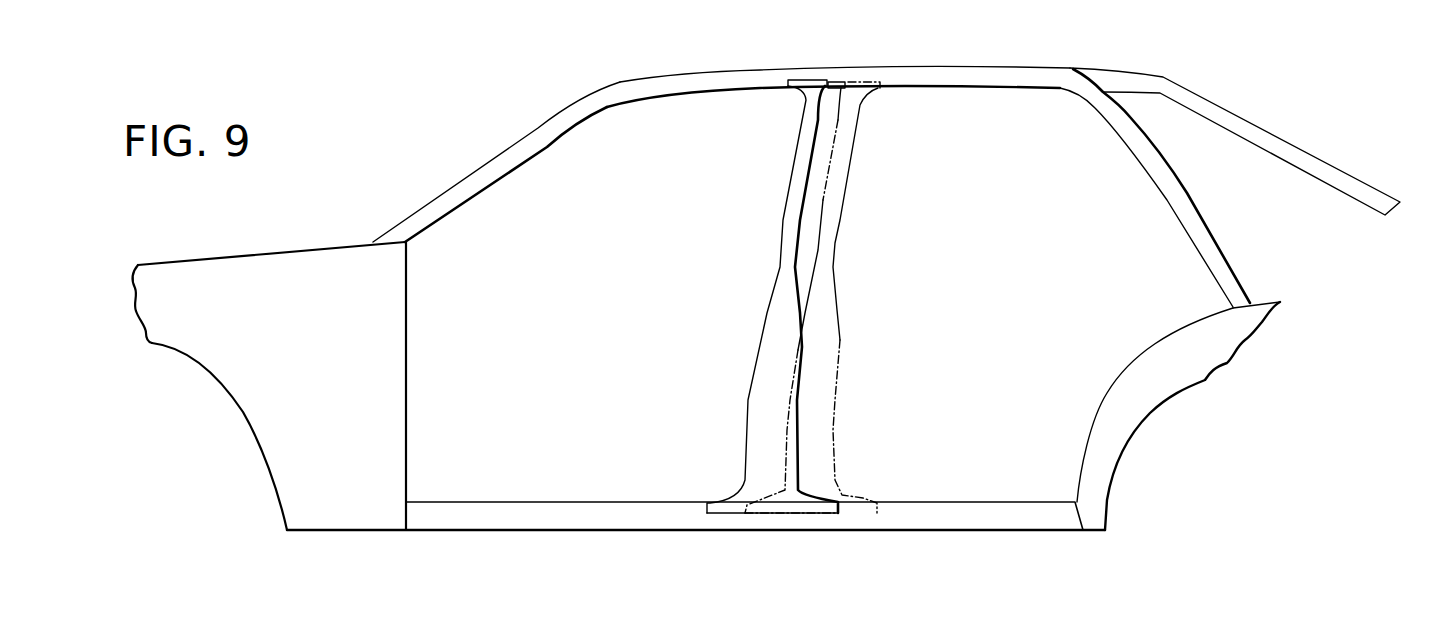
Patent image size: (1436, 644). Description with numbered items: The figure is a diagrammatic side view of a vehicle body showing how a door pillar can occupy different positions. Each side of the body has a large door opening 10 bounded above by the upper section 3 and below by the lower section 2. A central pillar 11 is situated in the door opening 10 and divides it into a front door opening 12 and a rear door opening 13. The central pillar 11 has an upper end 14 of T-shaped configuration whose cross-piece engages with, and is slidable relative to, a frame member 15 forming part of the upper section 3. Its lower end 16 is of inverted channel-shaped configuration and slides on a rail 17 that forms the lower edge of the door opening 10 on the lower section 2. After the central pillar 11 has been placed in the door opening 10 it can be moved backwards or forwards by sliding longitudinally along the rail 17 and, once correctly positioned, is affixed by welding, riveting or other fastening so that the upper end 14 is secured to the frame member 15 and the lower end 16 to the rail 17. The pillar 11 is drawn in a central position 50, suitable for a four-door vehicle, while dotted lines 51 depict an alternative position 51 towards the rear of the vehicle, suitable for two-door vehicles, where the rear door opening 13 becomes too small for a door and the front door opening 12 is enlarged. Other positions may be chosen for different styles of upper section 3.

The lower section 2 is at (462, 520).
The upper section 3 is at (703, 73).
The door opening 10 is at (960, 458).
The central pillar 11 is at (762, 418).
The front door opening 12 is at (556, 160).
The rear door opening 13 is at (983, 107).
The upper end 14 is at (798, 80).
The frame member 15 is at (823, 72).
The lower end 16 is at (727, 507).
The rail 17 is at (522, 497).
The central position 50 is at (798, 513).
The alternative position 51 is at (833, 398).